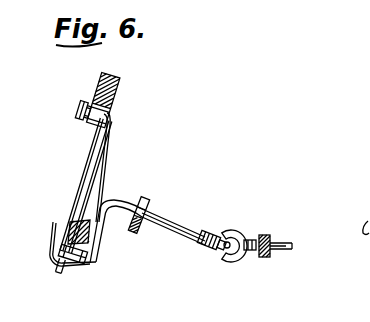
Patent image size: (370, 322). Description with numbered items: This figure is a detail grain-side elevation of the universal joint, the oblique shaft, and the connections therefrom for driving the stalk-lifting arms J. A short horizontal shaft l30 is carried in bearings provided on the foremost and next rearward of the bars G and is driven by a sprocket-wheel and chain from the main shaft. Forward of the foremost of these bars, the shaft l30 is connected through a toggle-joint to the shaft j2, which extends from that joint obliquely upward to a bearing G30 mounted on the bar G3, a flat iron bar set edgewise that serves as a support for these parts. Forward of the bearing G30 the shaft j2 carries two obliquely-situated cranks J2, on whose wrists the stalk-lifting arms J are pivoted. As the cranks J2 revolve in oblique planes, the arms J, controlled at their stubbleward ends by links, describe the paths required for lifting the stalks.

The stalk-lifting arm J is at (115, 93).
The crank J2 is at (22, 298).
The front and rear bars G is at (268, 257).
The bar G3 is at (148, 214).
The bearing G30 is at (145, 198).
The shaft j2 is at (185, 223).
The short horizontal shaft l30 is at (282, 248).